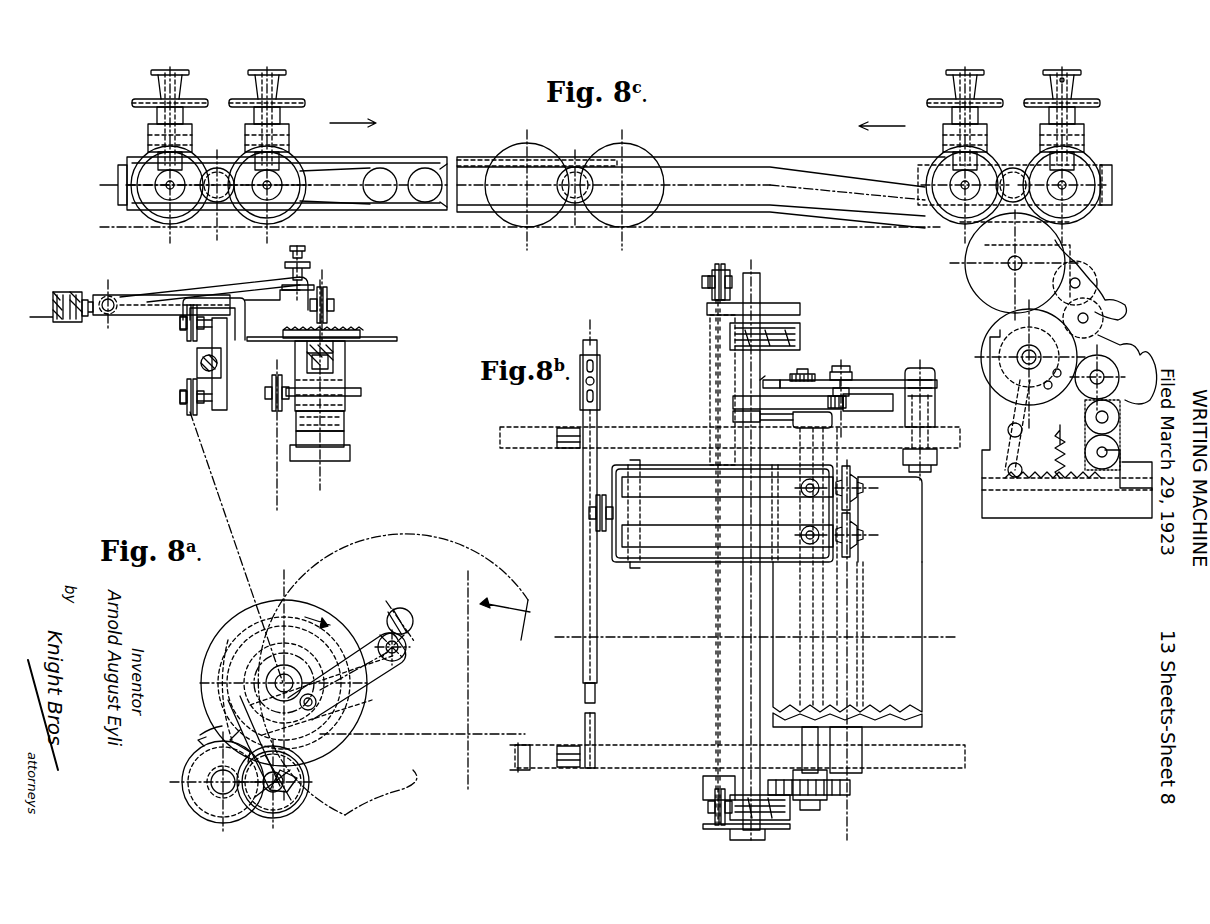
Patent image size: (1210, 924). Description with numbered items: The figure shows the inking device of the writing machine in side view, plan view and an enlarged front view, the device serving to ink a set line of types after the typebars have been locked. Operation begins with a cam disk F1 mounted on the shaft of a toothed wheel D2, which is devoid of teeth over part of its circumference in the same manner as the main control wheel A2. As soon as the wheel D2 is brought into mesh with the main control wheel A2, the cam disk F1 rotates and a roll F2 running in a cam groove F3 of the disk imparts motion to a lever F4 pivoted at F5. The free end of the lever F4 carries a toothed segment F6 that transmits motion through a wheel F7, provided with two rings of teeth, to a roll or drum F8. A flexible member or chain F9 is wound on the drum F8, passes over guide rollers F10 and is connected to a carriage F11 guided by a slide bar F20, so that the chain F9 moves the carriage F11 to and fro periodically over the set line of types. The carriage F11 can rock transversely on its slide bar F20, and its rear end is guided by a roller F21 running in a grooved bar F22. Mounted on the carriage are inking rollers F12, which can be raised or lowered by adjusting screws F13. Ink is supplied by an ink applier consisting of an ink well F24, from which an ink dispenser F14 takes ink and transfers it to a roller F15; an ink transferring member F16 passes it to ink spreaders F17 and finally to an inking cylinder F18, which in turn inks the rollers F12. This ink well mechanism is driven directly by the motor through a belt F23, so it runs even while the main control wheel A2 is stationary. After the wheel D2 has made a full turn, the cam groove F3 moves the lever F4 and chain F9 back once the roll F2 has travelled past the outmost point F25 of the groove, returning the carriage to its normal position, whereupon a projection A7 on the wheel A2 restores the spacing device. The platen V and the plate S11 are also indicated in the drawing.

In FIG. 8A, the cam disk F1 is at (204, 655).
In FIG. 8B, the cam disk F1 is at (880, 397).
In FIG. 8A, the roll F2 is at (316, 706).
In FIG. 8B, the roll F2 is at (845, 372).
In FIG. 8A, the cam groove F3 is at (287, 622).
In FIG. 8B, the cam groove F3 is at (848, 406).
In FIG. 8A, the lever F4 is at (375, 668).
In FIG. 8B, the lever F4 is at (872, 382).
In FIG. 8A, the pivot F5 is at (406, 646).
In FIG. 8B, the pivot F5 is at (925, 370).
In FIG. 8A, the toothed segment F6 is at (270, 745).
In FIG. 8B, the toothed segment F6 is at (768, 380).
In FIG. 8A, the wheel F7 is at (295, 800).
In FIG. 8B, the wheel F7 is at (808, 372).
In FIG. 8A, the roll or drum F8 is at (210, 766).
In FIG. 8B, the roll or drum F8 is at (780, 328).
In FIG. 8A, the flexible member or chain F9 is at (215, 505).
In FIG. 8A, the guide rollers F10 is at (182, 392).
In FIG. 8B, the guide rollers F10 is at (708, 285).
In FIG. 8C, the carriage F11 is at (1046, 132).
In FIG. 8A, the carriage F11 is at (140, 308).
In FIG. 8C, the inking rollers F12 is at (936, 166).
In FIG. 8A, the inking rollers F12 is at (330, 296).
In FIG. 8B, the inking rollers F12 is at (858, 532).
In FIG. 8C, the adjusting screws F13 is at (1072, 81).
In FIG. 8A, the adjusting screws F13 is at (285, 252).
In FIG. 8B, the adjusting screws F13 is at (808, 528).
In FIG. 8C, the ink dispenser F14 is at (1125, 464).
In FIG. 8C, the roller F15 is at (1112, 447).
In FIG. 8A, the roller F15 is at (346, 446).
In FIG. 8C, the ink transferring member F16 is at (1112, 412).
In FIG. 8A, the ink transferring member F16 is at (345, 428).
In FIG. 8C, the ink spreaders F17 is at (1112, 350).
In FIG. 8A, the ink spreaders F17 is at (346, 406).
In FIG. 8C, the inking cylinder F18 is at (975, 280).
In FIG. 8A, the slide bar F20 is at (217, 364).
In FIG. 8B, the slide bar F20 is at (716, 596).
In FIG. 8C, the roller F21 is at (1040, 203).
In FIG. 8A, the roller F21 is at (74, 320).
In FIG. 8B, the roller F21 is at (595, 511).
In FIG. 8C, the grooved bar F22 is at (747, 176).
In FIG. 8A, the grooved bar F22 is at (65, 292).
In FIG. 8B, the grooved bar F22 is at (584, 690).
In FIG. 8A, the belt F23 is at (277, 490).
In FIG. 8C, the ink well F24 is at (1100, 512).
In FIG. 8A, the ink well F24 is at (340, 460).
In FIG. 8B, the ink well F24 is at (855, 456).
In FIG. 8A, the outmost point of the groove F25 is at (258, 618).
In FIG. 8A, the toothed wheel D2 is at (296, 658).
In FIG. 8B, the toothed wheel D2 is at (850, 788).
In FIG. 8A, the main control wheel A2 is at (500, 600).
In FIG. 8A, the projection A7 is at (413, 619).
In FIG. 8A, the platen V is at (352, 330).
In FIG. 8A, the plate S11 is at (388, 338).